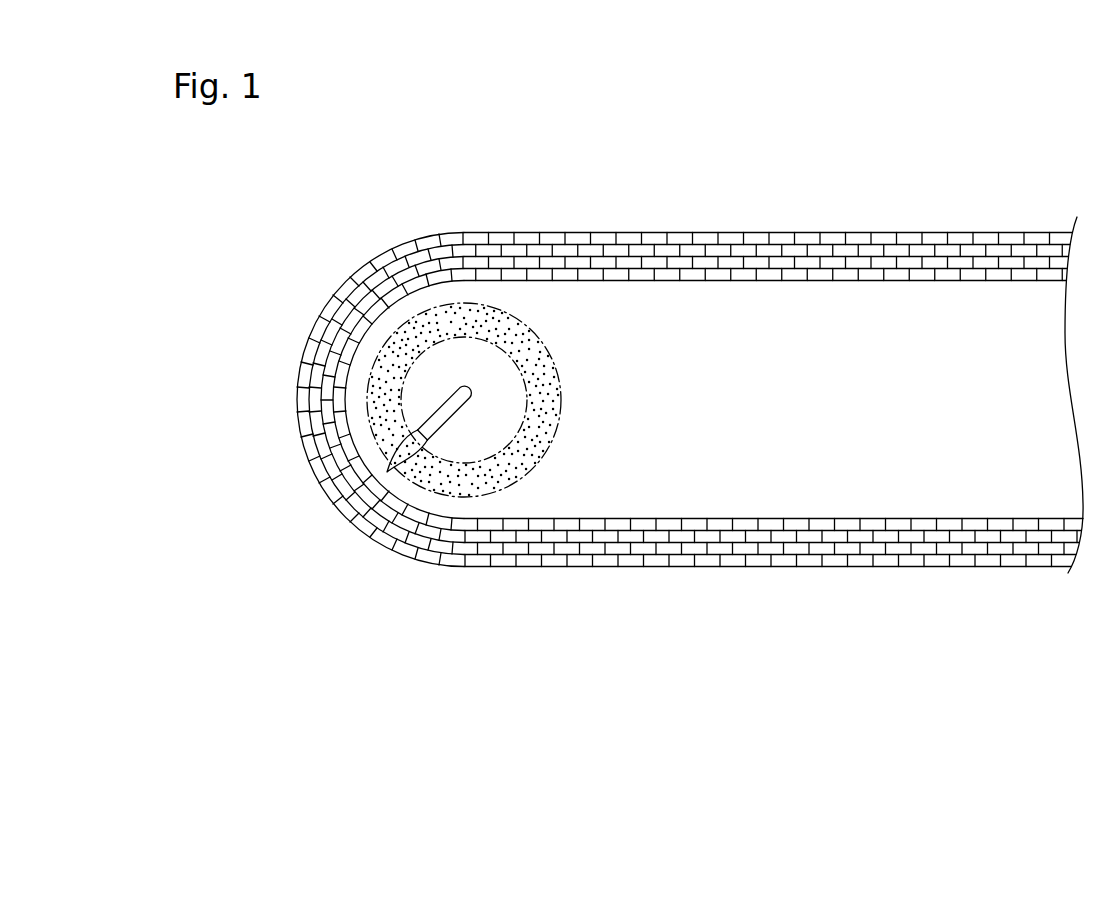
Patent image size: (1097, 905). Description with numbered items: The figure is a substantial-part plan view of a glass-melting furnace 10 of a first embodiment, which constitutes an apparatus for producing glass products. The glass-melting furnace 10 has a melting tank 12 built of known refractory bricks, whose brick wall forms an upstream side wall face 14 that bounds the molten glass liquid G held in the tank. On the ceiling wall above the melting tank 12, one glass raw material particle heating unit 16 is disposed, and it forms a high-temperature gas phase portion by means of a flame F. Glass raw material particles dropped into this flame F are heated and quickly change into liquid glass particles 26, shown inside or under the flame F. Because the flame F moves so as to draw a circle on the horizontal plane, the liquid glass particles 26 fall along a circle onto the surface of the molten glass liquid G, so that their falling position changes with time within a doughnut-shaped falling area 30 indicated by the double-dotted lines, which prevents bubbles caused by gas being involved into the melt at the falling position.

The glass-melting furnace 10 is at (654, 357).
The melting tank 12 is at (654, 392).
The upstream side wall face 14 is at (327, 375).
The glass raw material particle heating unit 16 is at (490, 375).
The liquid glass particles 26 is at (398, 455).
The falling area 30 is at (561, 399).
The flame F is at (425, 447).
The molten glass liquid G is at (727, 497).